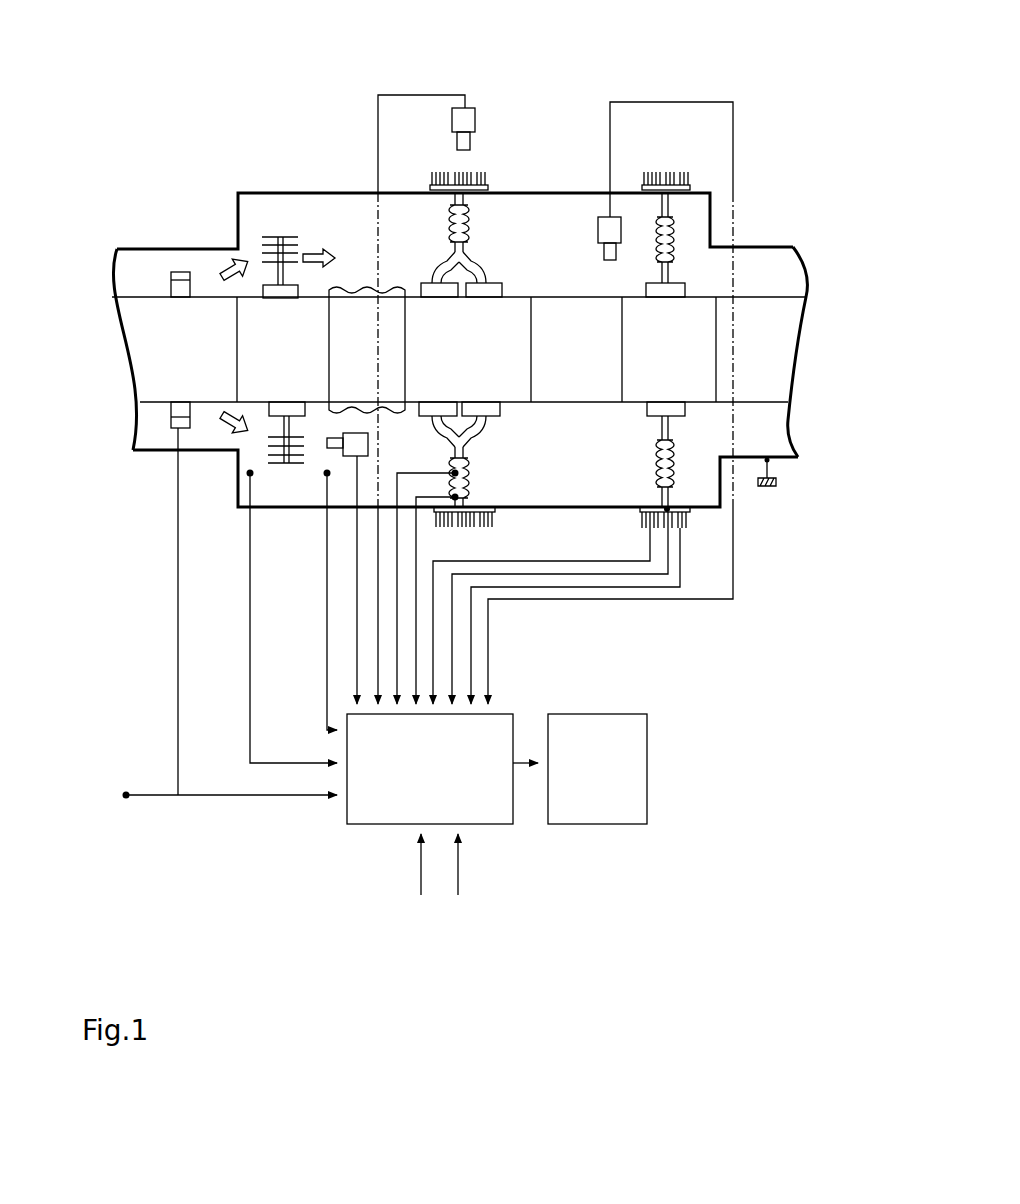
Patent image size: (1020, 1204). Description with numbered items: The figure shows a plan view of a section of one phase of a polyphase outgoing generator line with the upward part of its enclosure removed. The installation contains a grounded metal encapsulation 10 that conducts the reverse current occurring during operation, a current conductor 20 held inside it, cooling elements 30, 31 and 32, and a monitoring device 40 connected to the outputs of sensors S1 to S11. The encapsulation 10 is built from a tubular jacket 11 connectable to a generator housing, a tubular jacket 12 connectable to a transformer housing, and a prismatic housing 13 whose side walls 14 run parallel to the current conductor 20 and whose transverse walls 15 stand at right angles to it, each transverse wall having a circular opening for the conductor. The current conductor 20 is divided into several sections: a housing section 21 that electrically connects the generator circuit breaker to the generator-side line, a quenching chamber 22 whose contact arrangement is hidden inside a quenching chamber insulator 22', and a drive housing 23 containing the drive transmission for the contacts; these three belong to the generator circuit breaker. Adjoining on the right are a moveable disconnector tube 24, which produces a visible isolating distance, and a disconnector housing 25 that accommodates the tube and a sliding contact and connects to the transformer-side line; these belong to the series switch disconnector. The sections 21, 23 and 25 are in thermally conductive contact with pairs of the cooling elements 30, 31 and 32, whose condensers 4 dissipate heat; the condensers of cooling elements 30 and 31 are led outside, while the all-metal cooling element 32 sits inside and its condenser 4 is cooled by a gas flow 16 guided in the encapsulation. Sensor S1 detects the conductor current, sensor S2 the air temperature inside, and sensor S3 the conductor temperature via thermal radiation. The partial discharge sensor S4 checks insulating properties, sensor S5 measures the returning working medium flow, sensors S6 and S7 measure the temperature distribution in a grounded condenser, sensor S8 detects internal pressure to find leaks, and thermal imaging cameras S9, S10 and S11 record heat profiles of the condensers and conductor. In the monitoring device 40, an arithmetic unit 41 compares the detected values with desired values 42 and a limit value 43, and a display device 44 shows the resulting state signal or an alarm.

The grounded metal encapsulation 10 is at (782, 458).
The tubular jacket 11 is at (115, 248).
The tubular jacket 12 is at (770, 260).
The prismatic housing 13 is at (710, 192).
The side walls 14 is at (403, 193).
The transverse walls 15 is at (238, 232).
The gas flow 16 is at (222, 262).
The current conductor 20 is at (758, 340).
The housing section 21 is at (298, 317).
The quenching chamber 22 is at (367, 224).
The quenching chamber insulator 22' is at (360, 176).
The drive housing 23 is at (458, 377).
The disconnector tube 24 is at (582, 358).
The disconnector housing 25 is at (703, 377).
The cooling element 30 is at (463, 445).
The cooling element 31 is at (664, 400).
The cooling element 32 is at (293, 413).
The condenser 4 is at (463, 173).
The monitoring device 40 is at (460, 804).
The arithmetic unit 41 is at (390, 805).
The desired values 42 is at (391, 864).
The limit value 43 is at (484, 864).
The display device 44 is at (592, 780).
The sensor S1 is at (172, 415).
The sensor S2 is at (250, 473).
The sensor S3 is at (327, 473).
The partial discharge sensor S4 is at (455, 473).
The sensor S5 is at (455, 497).
The sensor S6 is at (650, 530).
The sensor S7 is at (688, 530).
The sensor S8 is at (670, 530).
The thermal imaging camera S9 is at (330, 448).
The thermal imaging camera S10 is at (470, 113).
The thermal imaging camera S11 is at (613, 217).